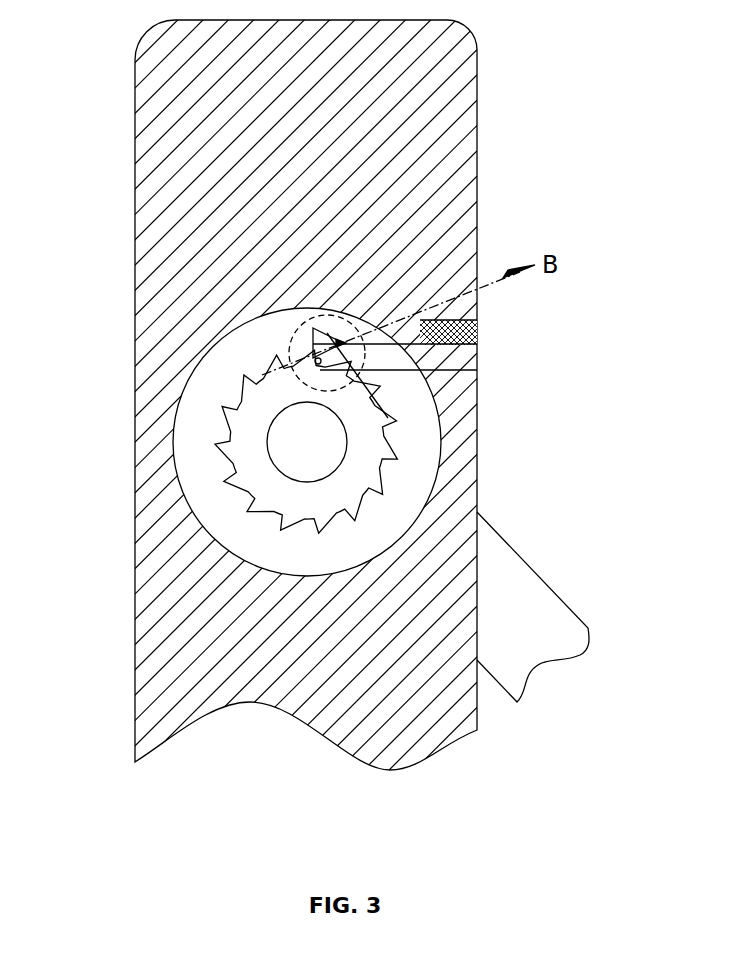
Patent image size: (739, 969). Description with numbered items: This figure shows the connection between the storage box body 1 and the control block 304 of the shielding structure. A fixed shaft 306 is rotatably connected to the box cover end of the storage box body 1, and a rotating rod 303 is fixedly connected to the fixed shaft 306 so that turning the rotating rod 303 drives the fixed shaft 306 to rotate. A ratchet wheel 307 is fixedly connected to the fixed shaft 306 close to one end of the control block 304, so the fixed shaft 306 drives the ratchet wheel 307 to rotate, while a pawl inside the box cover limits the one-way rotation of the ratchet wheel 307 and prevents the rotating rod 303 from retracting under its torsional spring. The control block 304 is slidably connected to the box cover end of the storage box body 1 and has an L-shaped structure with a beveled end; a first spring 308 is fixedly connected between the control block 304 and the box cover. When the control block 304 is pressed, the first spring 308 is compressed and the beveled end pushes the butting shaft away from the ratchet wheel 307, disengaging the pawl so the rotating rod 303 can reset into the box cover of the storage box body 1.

The storage box body 1 is at (152, 293).
The rotating rod 303 is at (523, 593).
The control block 304 is at (465, 358).
The fixed shaft 306 is at (315, 444).
The ratchet wheel 307 is at (245, 447).
The first spring 308 is at (437, 329).